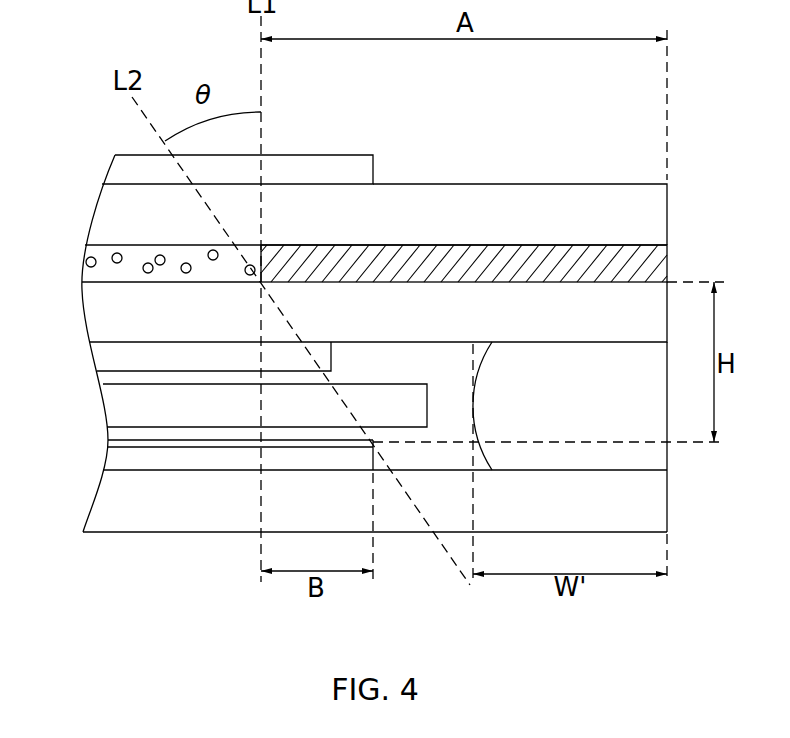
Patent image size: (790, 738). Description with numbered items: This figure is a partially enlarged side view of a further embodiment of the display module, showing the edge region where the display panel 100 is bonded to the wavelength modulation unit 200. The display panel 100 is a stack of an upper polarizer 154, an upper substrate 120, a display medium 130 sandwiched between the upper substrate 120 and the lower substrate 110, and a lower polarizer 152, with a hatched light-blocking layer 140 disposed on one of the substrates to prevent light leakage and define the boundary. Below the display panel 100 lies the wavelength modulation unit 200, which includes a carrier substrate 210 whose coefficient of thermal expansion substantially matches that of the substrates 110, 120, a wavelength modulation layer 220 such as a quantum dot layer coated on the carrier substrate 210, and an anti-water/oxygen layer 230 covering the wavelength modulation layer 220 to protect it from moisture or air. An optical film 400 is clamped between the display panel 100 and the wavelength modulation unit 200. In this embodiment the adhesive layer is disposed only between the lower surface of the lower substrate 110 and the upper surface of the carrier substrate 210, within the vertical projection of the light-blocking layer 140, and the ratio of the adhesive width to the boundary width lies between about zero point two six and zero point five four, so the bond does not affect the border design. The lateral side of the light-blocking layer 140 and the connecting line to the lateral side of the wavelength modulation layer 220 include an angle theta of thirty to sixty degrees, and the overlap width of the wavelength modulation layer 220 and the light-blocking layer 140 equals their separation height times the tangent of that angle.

The display panel 100 is at (374, 66).
The lower substrate 110 is at (382, 312).
The upper substrate 120 is at (277, 195).
The display medium 130 is at (250, 254).
The light-blocking layer 140 is at (628, 265).
The lower polarizer 152 is at (113, 358).
The upper polarizer 154 is at (135, 167).
The wavelength modulation unit 200 is at (233, 605).
The carrier substrate 210 is at (232, 507).
The wavelength modulation layer 220 is at (160, 458).
The anti-water/oxygen layer 230 is at (110, 443).
The optical film 400 is at (118, 413).